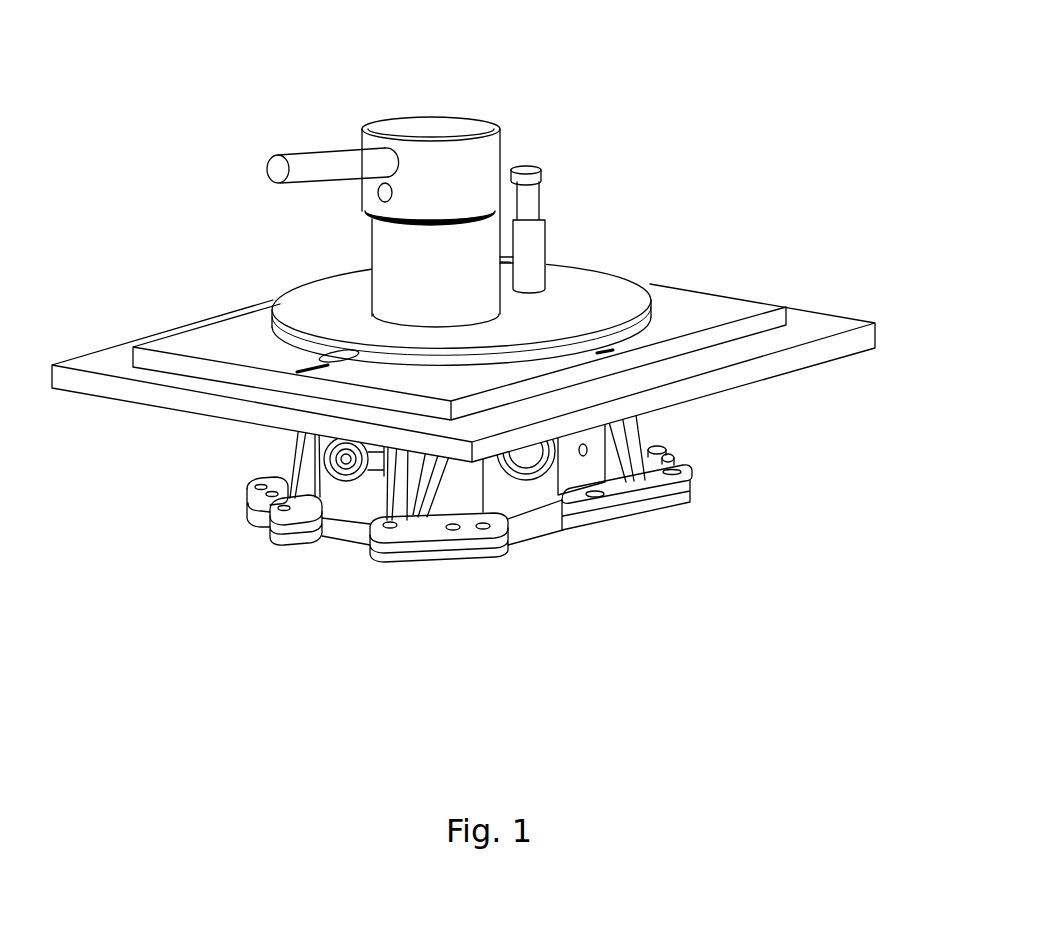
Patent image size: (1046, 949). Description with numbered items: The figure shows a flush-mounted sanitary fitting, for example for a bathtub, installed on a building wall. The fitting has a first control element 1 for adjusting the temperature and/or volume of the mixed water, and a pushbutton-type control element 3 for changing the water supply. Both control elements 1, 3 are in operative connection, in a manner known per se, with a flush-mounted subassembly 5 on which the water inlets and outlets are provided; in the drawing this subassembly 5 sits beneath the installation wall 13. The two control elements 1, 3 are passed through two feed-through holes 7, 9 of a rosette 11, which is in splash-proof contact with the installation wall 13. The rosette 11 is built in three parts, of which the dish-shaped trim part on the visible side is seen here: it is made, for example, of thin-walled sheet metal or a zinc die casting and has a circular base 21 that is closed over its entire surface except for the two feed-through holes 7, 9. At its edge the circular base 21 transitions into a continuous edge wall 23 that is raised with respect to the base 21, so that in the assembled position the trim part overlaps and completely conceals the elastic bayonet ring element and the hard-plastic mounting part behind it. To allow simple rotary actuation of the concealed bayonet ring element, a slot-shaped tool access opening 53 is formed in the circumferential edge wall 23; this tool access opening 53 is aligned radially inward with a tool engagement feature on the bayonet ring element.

The first control element 1 is at (424, 133).
The pushbutton-type control element 3 is at (527, 167).
The flush-mounted subassembly 5 is at (725, 397).
The feed-through hole 7 is at (373, 316).
The feed-through hole 9 is at (568, 294).
The rosette 11 is at (604, 297).
The installation wall 13 is at (895, 280).
The base 21 is at (633, 280).
The edge wall 23 is at (657, 307).
The tool access opening 53 is at (270, 323).